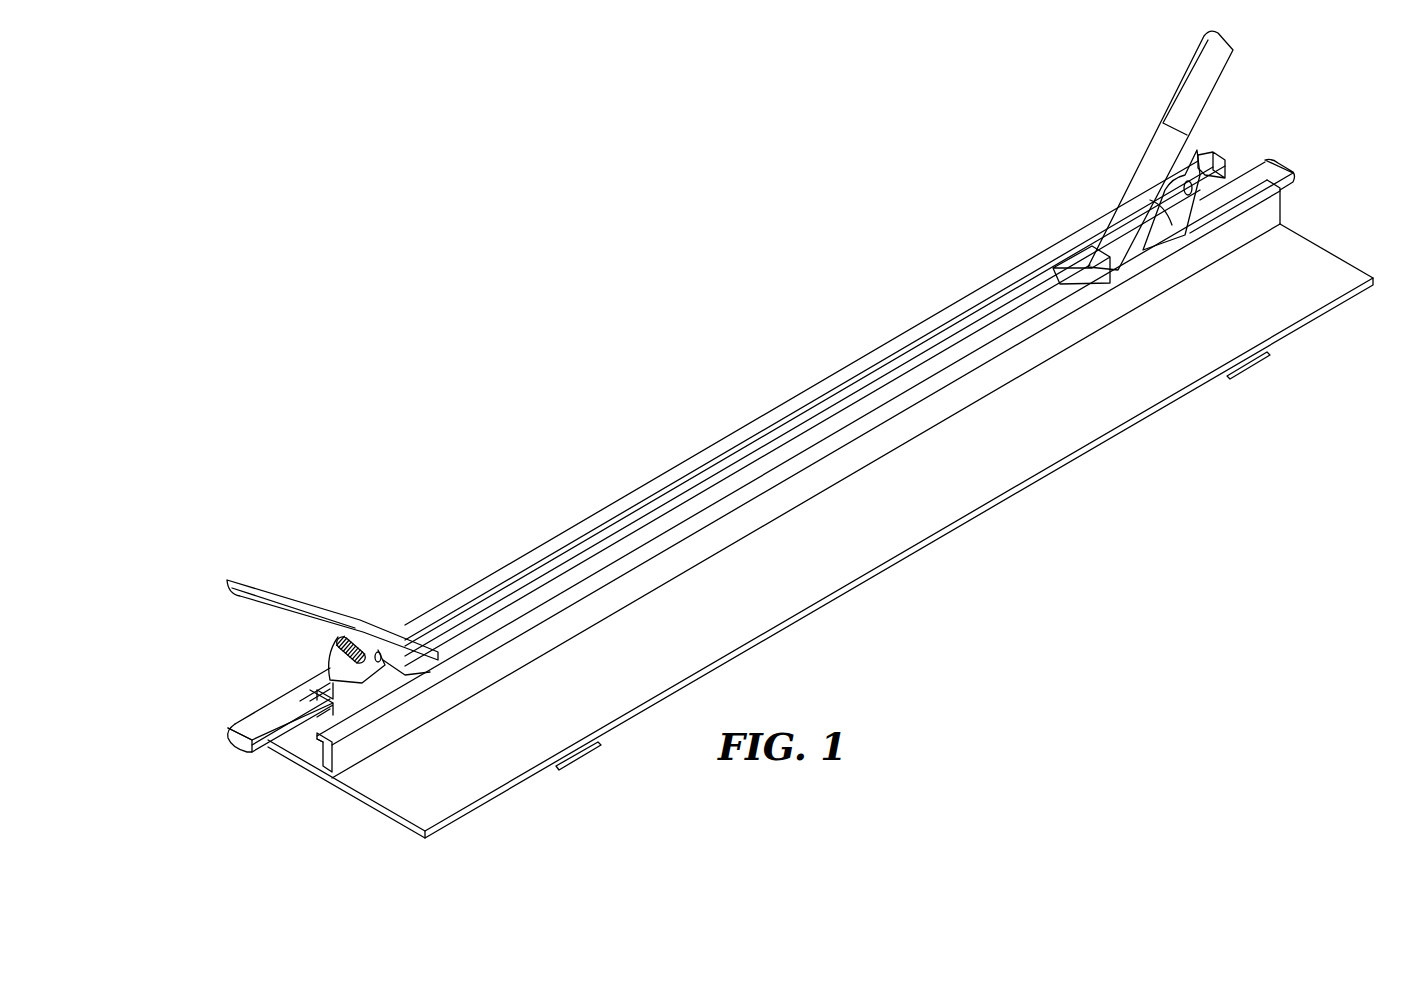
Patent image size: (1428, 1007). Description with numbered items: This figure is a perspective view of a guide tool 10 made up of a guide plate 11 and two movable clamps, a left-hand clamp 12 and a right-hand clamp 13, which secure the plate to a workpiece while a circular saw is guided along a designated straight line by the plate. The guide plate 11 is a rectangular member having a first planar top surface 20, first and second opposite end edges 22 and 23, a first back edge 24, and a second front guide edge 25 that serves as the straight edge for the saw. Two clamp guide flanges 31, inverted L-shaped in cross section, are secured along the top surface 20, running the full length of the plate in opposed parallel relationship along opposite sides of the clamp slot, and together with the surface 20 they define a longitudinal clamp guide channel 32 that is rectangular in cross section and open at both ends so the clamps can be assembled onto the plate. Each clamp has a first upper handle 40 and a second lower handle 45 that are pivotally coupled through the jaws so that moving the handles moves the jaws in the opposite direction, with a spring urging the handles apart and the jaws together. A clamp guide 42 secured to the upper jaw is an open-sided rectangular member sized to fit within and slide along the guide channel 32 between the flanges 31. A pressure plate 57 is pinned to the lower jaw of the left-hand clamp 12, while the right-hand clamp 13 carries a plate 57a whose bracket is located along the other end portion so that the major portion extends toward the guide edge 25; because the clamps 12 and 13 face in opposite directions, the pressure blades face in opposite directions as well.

The guide tool 10 is at (619, 256).
The guide plate 11 is at (848, 560).
The left-hand clamp 12 is at (338, 612).
The right-hand clamp 13 is at (1143, 152).
The first planar top surface 20 is at (1052, 432).
The first end edge 22 is at (388, 813).
The second end edge 23 is at (1340, 257).
The first back edge 24 is at (780, 485).
The second front guide edge 25 is at (783, 636).
The clamp guide flanges 31 is at (283, 696).
The longitudinal clamp guide channel 32 is at (307, 748).
The first upper handle 40 is at (232, 592).
The clamp guide 42 is at (420, 617).
The second lower handle 45 is at (235, 745).
The pressure plate 57 is at (557, 763).
The pressure plate of right-hand clamp 57a is at (1246, 372).